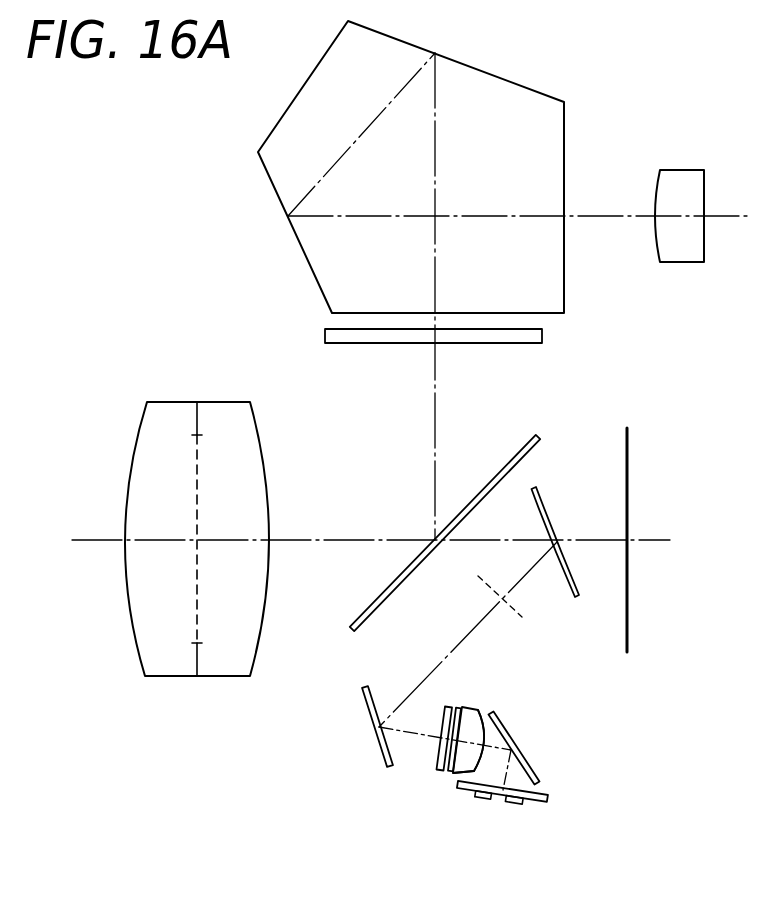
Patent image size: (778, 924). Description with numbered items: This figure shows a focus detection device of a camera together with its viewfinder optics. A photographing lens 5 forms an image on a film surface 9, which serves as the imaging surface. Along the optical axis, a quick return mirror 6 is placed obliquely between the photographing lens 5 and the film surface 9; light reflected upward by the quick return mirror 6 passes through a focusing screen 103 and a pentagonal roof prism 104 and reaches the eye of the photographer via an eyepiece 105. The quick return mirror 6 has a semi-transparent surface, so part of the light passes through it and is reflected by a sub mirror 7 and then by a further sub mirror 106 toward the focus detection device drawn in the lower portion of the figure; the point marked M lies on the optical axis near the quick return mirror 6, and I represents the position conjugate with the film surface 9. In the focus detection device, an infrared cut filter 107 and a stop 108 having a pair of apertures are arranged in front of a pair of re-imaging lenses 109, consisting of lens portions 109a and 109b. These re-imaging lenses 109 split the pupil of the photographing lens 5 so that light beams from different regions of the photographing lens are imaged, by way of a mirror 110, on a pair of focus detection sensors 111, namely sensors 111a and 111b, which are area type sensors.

The photographing lens 5 is at (143, 415).
The quick return mirror 6 is at (521, 440).
The sub mirror 7 is at (545, 505).
The film surface 9 is at (630, 443).
The optical axis point M is at (331, 538).
The conjugate position with the film surface I is at (522, 617).
The focusing screen 103 is at (545, 333).
The pentagonal roof prism 104 is at (518, 85).
The eyepiece 105 is at (692, 170).
The sub mirror 106 is at (378, 750).
The infrared cut filter 107 is at (437, 757).
The stop 108 is at (443, 772).
The re-imaging lenses 109 is at (463, 773).
The re-imaging lens 109a is at (483, 717).
The re-imaging lens 109b is at (479, 777).
The mirror 110 is at (535, 772).
The focus detection sensors 111 is at (556, 810).
The focus detection sensor 111a is at (523, 807).
The focus detection sensor 111b is at (490, 802).